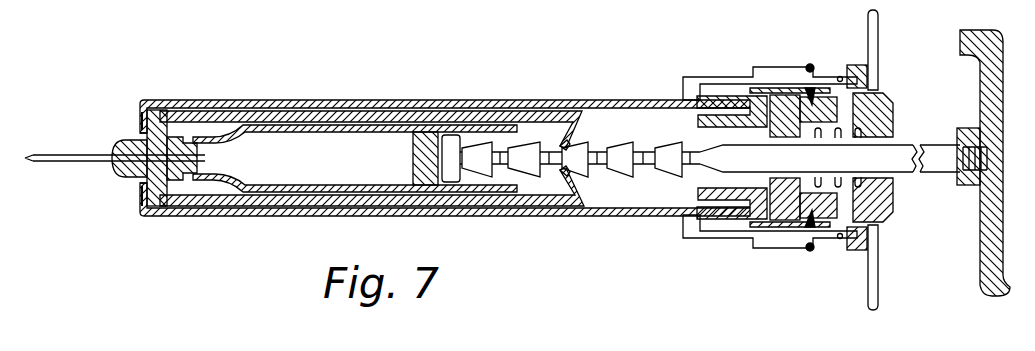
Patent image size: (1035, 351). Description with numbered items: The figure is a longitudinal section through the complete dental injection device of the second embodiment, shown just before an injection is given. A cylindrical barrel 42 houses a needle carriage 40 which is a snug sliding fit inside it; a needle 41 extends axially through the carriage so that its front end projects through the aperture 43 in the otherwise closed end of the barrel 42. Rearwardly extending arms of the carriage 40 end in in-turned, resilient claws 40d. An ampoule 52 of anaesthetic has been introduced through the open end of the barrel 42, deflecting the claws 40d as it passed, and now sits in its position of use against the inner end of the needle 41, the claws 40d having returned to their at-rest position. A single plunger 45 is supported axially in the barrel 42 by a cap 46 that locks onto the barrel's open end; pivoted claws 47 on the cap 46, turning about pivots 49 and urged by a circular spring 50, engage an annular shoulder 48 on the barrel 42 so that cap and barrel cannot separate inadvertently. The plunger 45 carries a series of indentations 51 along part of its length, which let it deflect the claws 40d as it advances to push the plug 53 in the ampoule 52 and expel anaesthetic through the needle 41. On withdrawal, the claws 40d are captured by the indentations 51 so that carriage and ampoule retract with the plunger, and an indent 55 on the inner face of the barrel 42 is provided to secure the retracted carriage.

The needle carriage 40 is at (170, 125).
The in-turned claw 40d is at (566, 147).
The needle 41 is at (78, 163).
The barrel 42 is at (272, 215).
The aperture 43 is at (140, 133).
The plunger 45 is at (647, 162).
The cap 46 is at (885, 115).
The claw 47 is at (690, 90).
The annular shoulder 48 is at (715, 103).
The pivot 49 is at (840, 76).
The circular spring 50 is at (810, 250).
The indentation 51 is at (646, 163).
The ampoule 52 is at (362, 128).
The plug 53 is at (420, 157).
The indent 55 is at (283, 101).